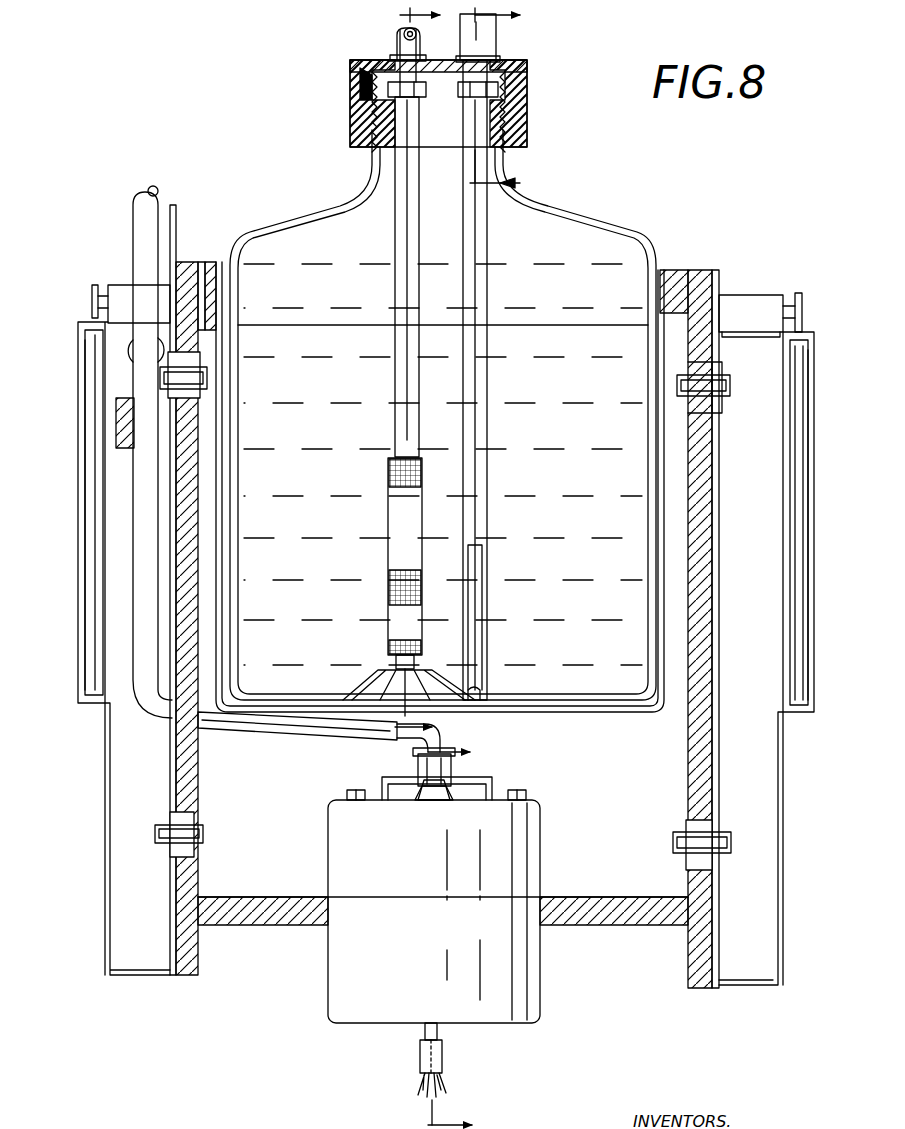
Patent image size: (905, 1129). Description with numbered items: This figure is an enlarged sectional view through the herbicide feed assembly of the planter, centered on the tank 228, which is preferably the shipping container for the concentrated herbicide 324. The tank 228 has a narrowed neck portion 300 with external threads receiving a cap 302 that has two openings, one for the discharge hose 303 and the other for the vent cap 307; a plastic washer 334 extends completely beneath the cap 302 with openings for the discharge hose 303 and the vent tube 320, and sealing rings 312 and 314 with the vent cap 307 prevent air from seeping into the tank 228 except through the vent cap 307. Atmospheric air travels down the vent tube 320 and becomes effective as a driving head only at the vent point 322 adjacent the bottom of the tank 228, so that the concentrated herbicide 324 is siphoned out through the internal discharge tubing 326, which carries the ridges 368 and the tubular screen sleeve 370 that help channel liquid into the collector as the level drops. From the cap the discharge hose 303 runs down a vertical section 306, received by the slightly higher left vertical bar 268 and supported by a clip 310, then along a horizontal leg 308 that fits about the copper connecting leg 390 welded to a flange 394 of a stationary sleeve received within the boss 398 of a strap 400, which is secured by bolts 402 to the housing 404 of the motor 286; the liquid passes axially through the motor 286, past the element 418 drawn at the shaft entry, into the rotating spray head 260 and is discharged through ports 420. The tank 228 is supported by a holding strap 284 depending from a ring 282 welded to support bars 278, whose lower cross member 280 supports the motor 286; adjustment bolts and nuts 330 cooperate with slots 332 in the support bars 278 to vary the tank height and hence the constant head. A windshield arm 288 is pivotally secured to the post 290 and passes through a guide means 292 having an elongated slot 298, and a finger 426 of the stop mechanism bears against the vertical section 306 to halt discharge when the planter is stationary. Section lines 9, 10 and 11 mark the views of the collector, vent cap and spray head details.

The section line 9- 9 is at (407, 373).
The section line 10- 10 is at (515, 100).
The section line 11- 11 is at (468, 934).
The tank 228 is at (590, 225).
The spray head 260 is at (433, 1058).
The vertical bar 268 is at (174, 225).
The support bar 278 is at (185, 768).
The lower cross member 280 is at (605, 925).
The ring 282 is at (206, 266).
The holding strap 284 is at (568, 715).
The motor 286 is at (545, 970).
The arm 288 is at (92, 304).
The post 290 is at (115, 285).
The guide means 292 is at (85, 395).
The elongated slot 298 is at (80, 512).
The neck portion 300 is at (505, 165).
The cap 302 is at (527, 93).
The discharge hose 303 is at (398, 45).
The vertical section 306 is at (140, 218).
The vent cap 307 is at (498, 42).
The horizontal leg 308 is at (265, 722).
The clip 310 is at (118, 422).
The sealing ring 312 is at (368, 75).
The sealing ring 314 is at (527, 66).
The vent tube 320 is at (482, 478).
The vent point 322 is at (482, 695).
The concentrated herbicide 324 is at (572, 296).
The discharge tubing 326 is at (395, 288).
The adjustment bolts and nuts 330 is at (207, 383).
The slot 332 is at (200, 375).
The plastic washer 334 is at (440, 95).
The ridge 368 is at (430, 690).
The tubular screen sleeve 370 is at (388, 520).
The copper connecting leg 390 is at (440, 735).
The flange 394 is at (413, 752).
The boss 398 is at (424, 766).
The strap 400 is at (478, 785).
The bolt 402 is at (347, 793).
The housing 404 is at (522, 857).
The shaft seal 418 is at (438, 802).
The port 420 is at (432, 1087).
The finger 426 is at (130, 348).